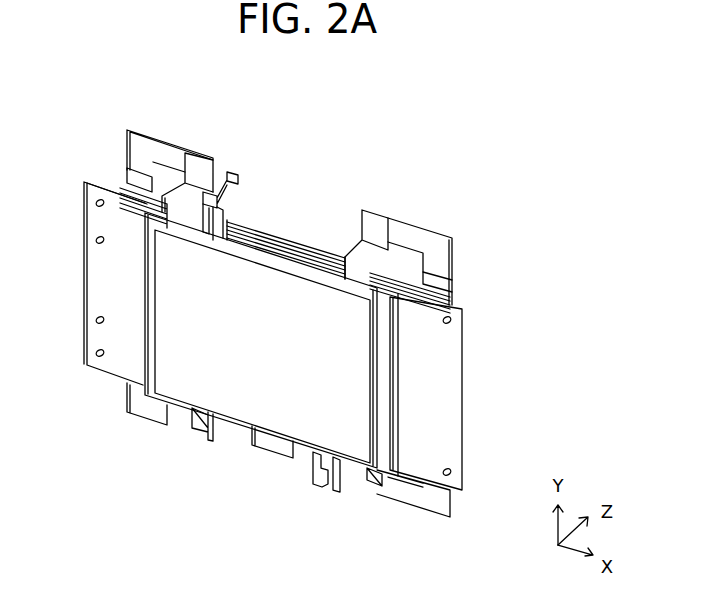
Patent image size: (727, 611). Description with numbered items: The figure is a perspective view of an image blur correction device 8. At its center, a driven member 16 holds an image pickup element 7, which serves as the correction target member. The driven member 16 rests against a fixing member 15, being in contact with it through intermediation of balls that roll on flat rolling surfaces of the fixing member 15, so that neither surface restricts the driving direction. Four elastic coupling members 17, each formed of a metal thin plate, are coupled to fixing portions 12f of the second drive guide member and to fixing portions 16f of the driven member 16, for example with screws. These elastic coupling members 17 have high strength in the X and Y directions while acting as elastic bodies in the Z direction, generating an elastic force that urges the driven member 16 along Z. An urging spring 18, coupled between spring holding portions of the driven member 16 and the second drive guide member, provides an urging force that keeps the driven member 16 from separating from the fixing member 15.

The image pickup element 7 is at (250, 392).
The image blur correction device 8 is at (505, 107).
The fixing portions 12f is at (128, 180).
The fixing member 15 is at (115, 357).
The driven member 16 is at (290, 260).
The fixing portions 16f is at (195, 163).
The elastic coupling members 17 is at (145, 143).
The urging spring 18 is at (236, 175).